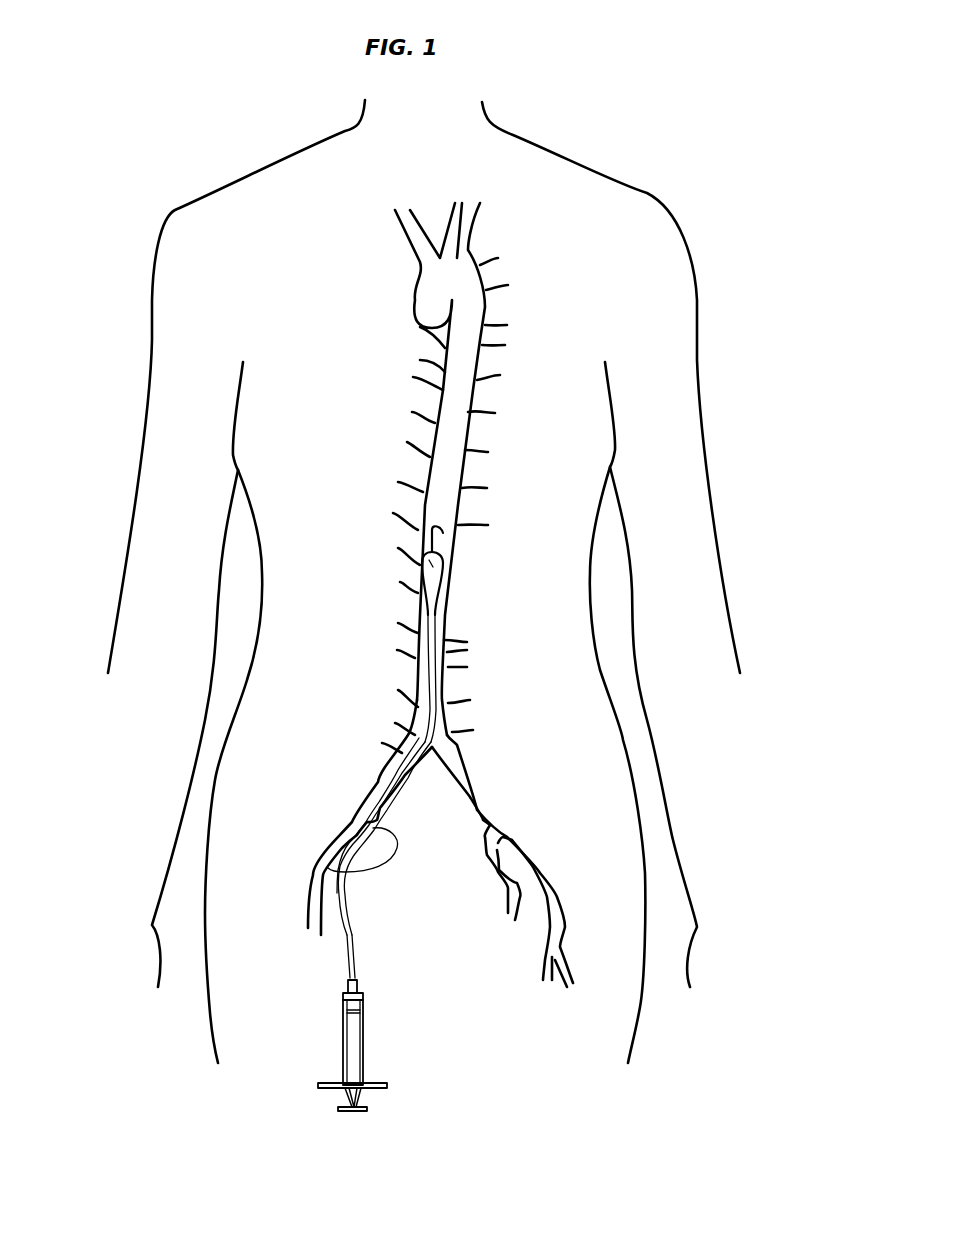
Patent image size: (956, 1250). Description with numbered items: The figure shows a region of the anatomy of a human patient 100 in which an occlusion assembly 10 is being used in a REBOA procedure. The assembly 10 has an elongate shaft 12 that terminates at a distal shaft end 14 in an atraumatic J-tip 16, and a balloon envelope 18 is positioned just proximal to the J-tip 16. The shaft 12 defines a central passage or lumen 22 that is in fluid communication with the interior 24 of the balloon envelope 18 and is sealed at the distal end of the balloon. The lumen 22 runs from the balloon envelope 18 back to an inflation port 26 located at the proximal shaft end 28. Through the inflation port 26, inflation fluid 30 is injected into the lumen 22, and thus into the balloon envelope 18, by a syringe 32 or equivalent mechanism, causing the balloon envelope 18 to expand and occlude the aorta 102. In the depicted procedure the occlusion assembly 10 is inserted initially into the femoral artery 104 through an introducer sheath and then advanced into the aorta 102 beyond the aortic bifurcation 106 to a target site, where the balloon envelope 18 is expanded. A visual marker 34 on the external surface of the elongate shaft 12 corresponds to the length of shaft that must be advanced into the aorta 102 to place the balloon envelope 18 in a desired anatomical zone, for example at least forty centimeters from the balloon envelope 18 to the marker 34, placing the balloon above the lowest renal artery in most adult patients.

The human patient 100 is at (655, 188).
The aorta 102 is at (452, 441).
The aortic bifurcation 106 is at (432, 747).
The distal shaft end 14 is at (423, 520).
The atraumatic J-tip 16 is at (443, 527).
The balloon envelope 18 is at (443, 563).
The interior of the balloon envelope 24 is at (433, 567).
The elongate shaft 12 is at (427, 728).
The central passage or lumen 22 is at (385, 783).
The femoral artery 104 is at (328, 868).
The occlusion assembly 10 is at (330, 941).
The visual marker 34 is at (353, 933).
The proximal shaft end 28 is at (335, 978).
The inflation port 26 is at (362, 982).
The inflation fluid 30 is at (363, 1000).
The syringe 32 is at (365, 1060).